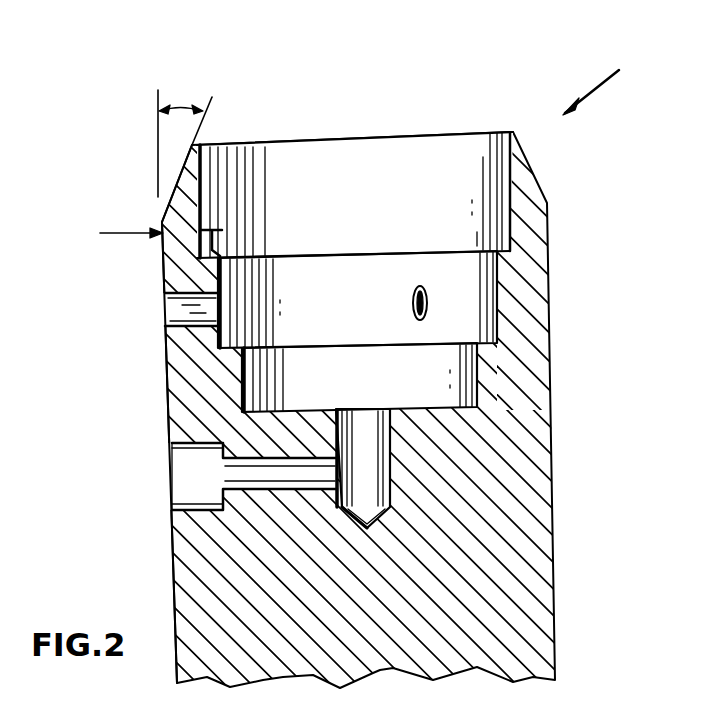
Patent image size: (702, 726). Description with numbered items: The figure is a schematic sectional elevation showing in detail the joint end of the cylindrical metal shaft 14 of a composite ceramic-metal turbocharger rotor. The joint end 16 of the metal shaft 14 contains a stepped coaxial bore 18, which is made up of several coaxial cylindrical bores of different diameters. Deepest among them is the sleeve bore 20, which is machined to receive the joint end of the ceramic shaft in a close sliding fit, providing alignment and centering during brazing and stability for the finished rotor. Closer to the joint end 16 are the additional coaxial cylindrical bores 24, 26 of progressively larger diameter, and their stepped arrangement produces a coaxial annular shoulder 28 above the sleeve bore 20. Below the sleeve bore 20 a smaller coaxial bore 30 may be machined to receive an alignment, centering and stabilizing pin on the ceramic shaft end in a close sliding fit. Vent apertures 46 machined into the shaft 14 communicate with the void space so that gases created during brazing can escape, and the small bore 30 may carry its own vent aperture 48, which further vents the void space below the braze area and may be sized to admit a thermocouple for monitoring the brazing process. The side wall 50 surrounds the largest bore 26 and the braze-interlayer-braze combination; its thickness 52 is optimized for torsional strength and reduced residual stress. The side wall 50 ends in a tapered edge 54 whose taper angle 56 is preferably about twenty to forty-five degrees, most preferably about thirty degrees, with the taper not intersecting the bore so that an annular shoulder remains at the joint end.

The metal shaft 14 is at (599, 78).
The joint end 16 is at (317, 141).
The stepped coaxial bore 18 is at (378, 160).
The sleeve bore 20 is at (463, 380).
The coaxial cylindrical bore 24 is at (490, 310).
The coaxial cylindrical bore 26 is at (492, 193).
The annular shoulder 28 is at (208, 254).
The coaxial bore 30 is at (377, 480).
The vent apertures 46 is at (185, 300).
The vent aperture 48 is at (223, 474).
The side wall 50 is at (527, 212).
The thickness 52 is at (194, 224).
The tapered edge 54 is at (185, 165).
The taper angle 56 is at (183, 102).